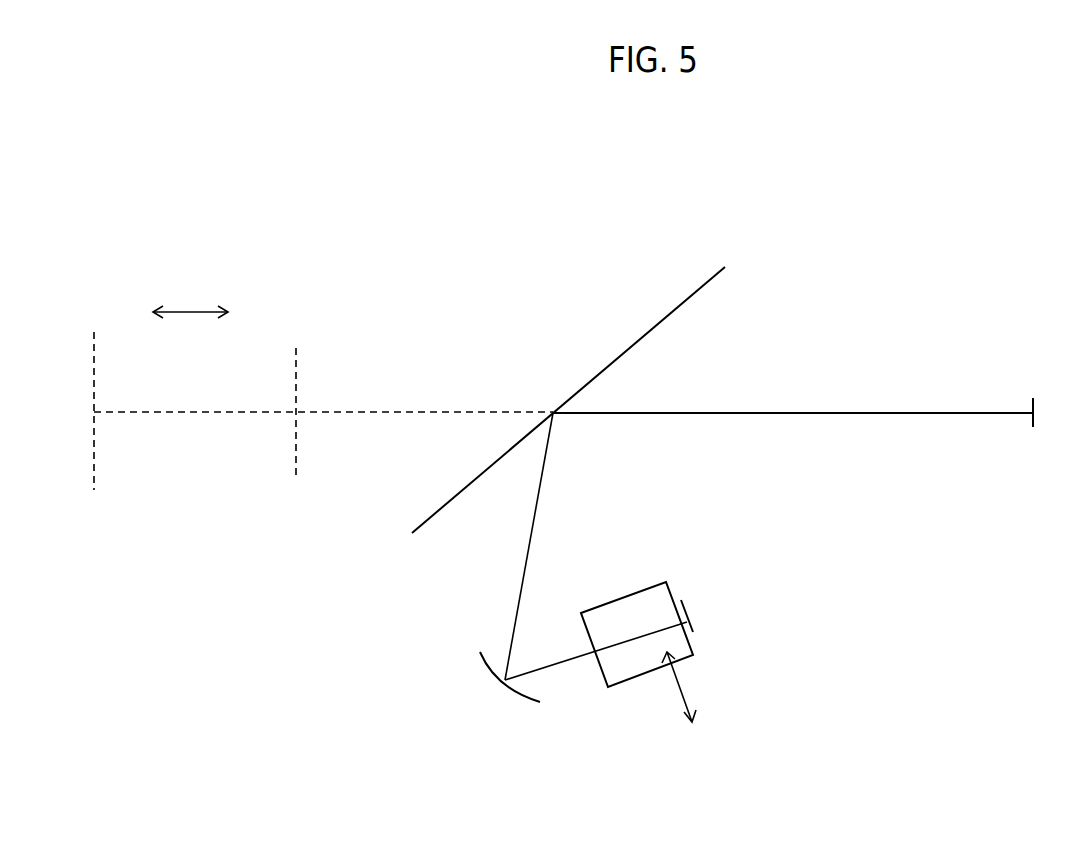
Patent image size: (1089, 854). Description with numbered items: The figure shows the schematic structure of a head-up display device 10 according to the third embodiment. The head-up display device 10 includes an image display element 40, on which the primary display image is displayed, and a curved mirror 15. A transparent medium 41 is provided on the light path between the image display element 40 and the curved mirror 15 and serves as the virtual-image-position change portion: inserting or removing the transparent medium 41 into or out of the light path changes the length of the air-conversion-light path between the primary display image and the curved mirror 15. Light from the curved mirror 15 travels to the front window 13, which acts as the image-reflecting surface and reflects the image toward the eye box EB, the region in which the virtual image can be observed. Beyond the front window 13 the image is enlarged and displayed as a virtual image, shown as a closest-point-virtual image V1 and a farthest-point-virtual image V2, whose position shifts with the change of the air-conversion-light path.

The head-up display device 10 is at (598, 499).
The front window 13 is at (680, 303).
The curved mirror 15 is at (517, 697).
The image display element 40 is at (692, 625).
The transparent medium 41 is at (633, 593).
The eye box EB is at (1035, 402).
The closest-point-virtual image V1 is at (297, 357).
The farthest-point-virtual image V2 is at (95, 340).